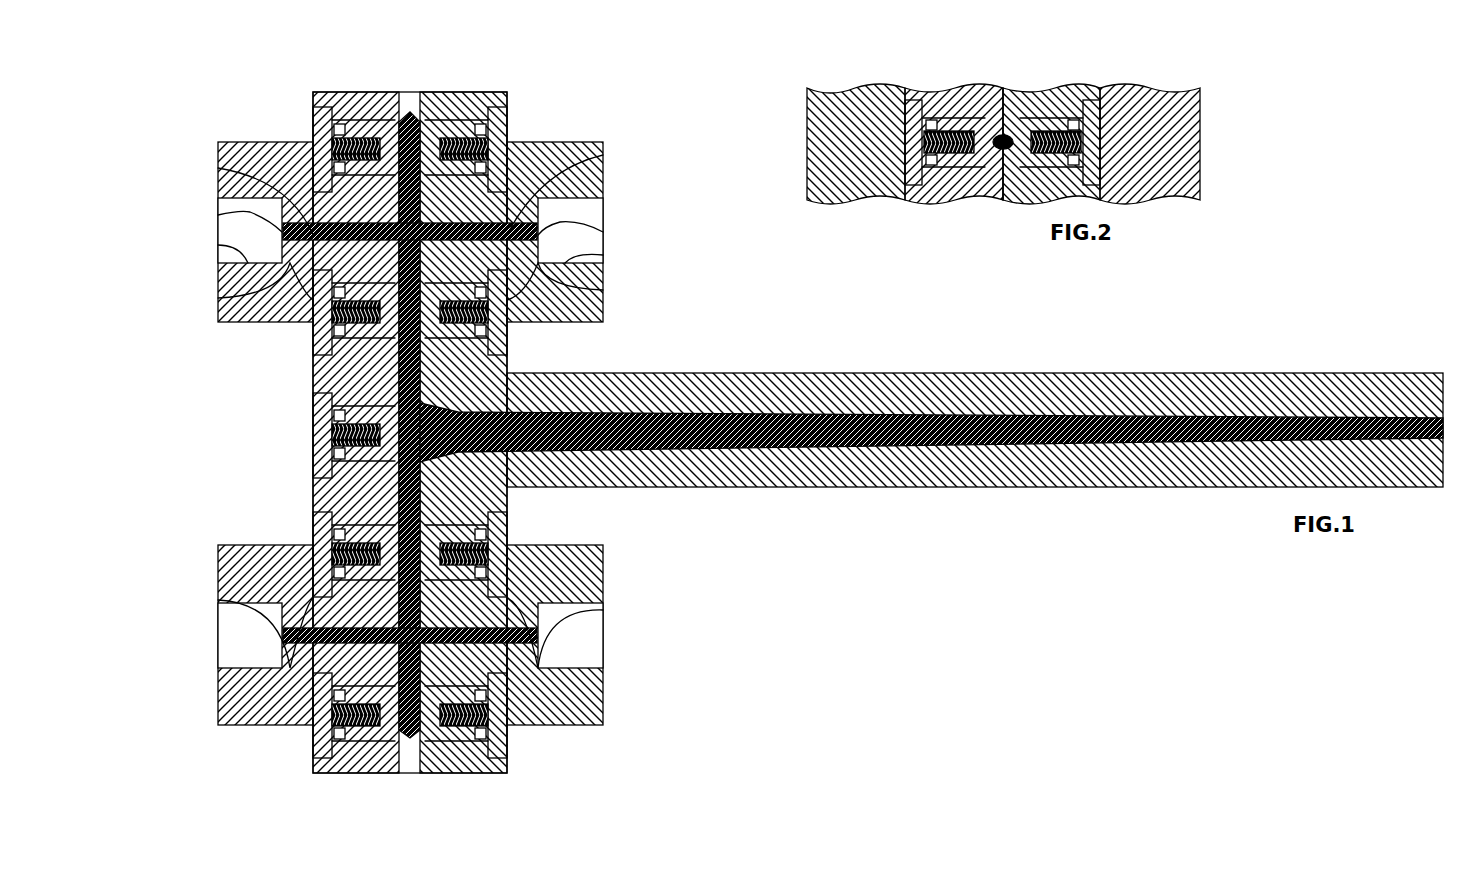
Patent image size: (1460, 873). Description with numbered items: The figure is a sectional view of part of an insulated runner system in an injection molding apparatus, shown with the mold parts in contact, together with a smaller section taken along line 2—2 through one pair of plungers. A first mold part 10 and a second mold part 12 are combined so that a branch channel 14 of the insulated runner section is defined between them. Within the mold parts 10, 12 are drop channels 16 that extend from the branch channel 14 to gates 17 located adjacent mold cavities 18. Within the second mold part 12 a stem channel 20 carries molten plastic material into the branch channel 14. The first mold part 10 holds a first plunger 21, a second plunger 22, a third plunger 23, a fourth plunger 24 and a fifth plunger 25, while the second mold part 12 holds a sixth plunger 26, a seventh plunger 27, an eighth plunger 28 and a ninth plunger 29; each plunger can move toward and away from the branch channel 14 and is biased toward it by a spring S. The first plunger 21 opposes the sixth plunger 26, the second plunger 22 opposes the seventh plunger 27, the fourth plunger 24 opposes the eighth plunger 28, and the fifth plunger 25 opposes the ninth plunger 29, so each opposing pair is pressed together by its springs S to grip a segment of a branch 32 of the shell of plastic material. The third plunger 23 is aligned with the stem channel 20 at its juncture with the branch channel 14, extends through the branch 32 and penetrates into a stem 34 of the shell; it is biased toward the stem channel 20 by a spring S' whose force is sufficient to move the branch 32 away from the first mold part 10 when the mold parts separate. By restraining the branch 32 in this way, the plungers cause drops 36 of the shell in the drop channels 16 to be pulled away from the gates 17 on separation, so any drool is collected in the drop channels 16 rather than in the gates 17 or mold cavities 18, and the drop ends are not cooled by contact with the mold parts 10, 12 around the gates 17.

In FIG. 1, the first mold part 10 is at (249, 130).
In FIG. 2, the first mold part 10 is at (912, 100).
In FIG. 1, the second mold part 12 is at (586, 133).
In FIG. 2, the second mold part 12 is at (1092, 98).
In FIG. 1, the branch channel 14 is at (396, 372).
In FIG. 1, the drop channels 16 is at (218, 298).
In FIG. 1, the gates 17 is at (218, 215).
In FIG. 1, the mold cavities 18 is at (218, 245).
In FIG. 1, the stem channel 20 is at (845, 452).
In FIG. 1, the first plunger 21 is at (360, 136).
In FIG. 2, the first plunger 21 is at (958, 120).
In FIG. 1, the second plunger 22 is at (322, 352).
In FIG. 1, the third plunger 23 is at (325, 404).
In FIG. 1, the fourth plunger 24 is at (325, 519).
In FIG. 1, the fifth plunger 25 is at (340, 748).
In FIG. 1, the sixth plunger 26 is at (460, 136).
In FIG. 2, the sixth plunger 26 is at (1010, 140).
In FIG. 1, the seventh plunger 27 is at (460, 338).
In FIG. 1, the eighth plunger 28 is at (470, 530).
In FIG. 1, the ninth plunger 29 is at (475, 748).
In FIG. 1, the branch of a shell of plastic material 32 is at (413, 114).
In FIG. 2, the branch of a shell of plastic material 32 is at (1006, 190).
In FIG. 1, the stem of the shell of plastic material 34 is at (930, 452).
In FIG. 1, the drops of the shell of plastic material 36 is at (218, 168).
In FIG. 1, the spring S is at (408, 406).
In FIG. 2, the spring S is at (1001, 82).
In FIG. 1, the spring S' is at (278, 434).
In FIG. 1, the line 2- 2 is at (207, 150).